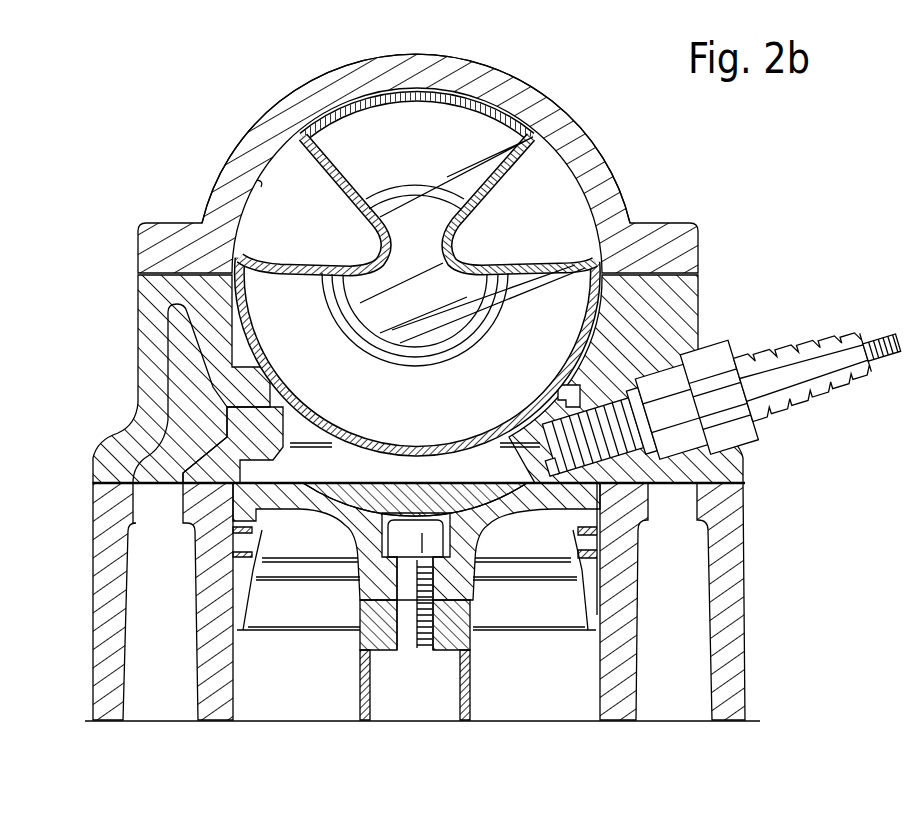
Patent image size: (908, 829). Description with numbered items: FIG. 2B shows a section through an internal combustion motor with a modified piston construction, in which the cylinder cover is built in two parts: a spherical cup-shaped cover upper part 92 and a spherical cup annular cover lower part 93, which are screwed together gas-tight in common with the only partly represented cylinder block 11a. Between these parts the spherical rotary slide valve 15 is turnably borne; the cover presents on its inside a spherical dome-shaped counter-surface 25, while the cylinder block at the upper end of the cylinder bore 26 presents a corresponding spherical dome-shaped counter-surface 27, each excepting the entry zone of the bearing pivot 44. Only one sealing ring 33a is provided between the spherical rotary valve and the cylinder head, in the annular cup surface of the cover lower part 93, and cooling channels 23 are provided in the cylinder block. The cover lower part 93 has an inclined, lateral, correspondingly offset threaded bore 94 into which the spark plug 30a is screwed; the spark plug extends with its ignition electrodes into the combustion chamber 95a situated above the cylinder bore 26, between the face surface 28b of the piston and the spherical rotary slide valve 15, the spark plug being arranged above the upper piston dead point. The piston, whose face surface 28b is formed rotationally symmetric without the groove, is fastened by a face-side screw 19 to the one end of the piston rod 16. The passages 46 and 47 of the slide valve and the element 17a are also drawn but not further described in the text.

The cylinder block 11a is at (584, 120).
The spherical rotary slide valve 15 is at (337, 110).
The piston rod 16 is at (363, 690).
The chamber 17a is at (503, 610).
The face-side screw 19 is at (395, 533).
The cooling channels 23 is at (695, 598).
The spherical dome-shaped counter-surface 25 is at (260, 183).
The cylinder bore 26 is at (598, 690).
The spherical dome-shaped counter-surface 27 is at (245, 337).
The face surface 28b is at (462, 503).
The spark plug 30a is at (775, 395).
The sealing ring 33a is at (228, 412).
The bearing pivot 44 is at (465, 347).
The port 46 is at (492, 207).
The port 47 is at (337, 203).
The cover upper part 92 is at (515, 90).
The cover lower part 93 is at (673, 300).
The threaded bore 94 is at (575, 395).
The combustion chamber 95a is at (315, 463).